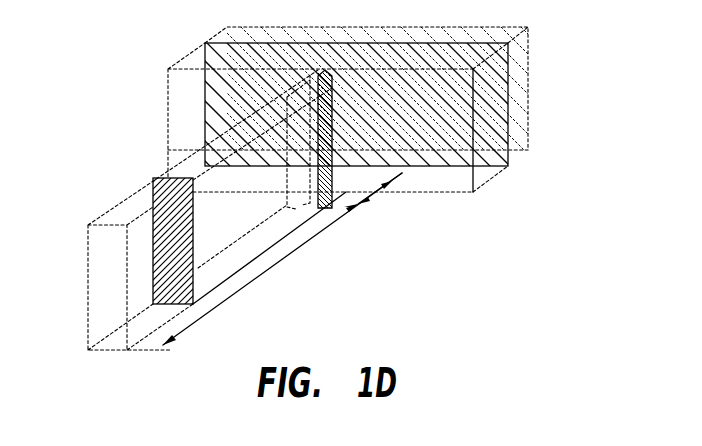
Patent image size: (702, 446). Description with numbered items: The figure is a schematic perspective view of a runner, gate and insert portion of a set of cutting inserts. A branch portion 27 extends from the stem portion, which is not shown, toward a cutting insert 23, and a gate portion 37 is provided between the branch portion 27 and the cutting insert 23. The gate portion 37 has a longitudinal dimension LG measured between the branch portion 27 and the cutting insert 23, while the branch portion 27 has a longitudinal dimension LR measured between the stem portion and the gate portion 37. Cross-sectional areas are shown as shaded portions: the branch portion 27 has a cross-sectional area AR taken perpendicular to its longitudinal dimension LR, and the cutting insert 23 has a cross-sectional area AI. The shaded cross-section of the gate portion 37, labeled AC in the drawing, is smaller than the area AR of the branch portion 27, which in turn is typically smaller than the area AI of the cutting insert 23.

The cutting insert 23 is at (534, 81).
The gate portion 37 is at (325, 72).
The aperture cavity AC is at (334, 176).
The cross-sectional area of the cutting insert AI is at (463, 142).
The cross-sectional area of the branch portion AR is at (164, 246).
The longitudinal dimension of the branch portion LR is at (263, 275).
The longitudinal dimension of the gate portion LG is at (378, 190).
The branch portion 27 is at (285, 222).